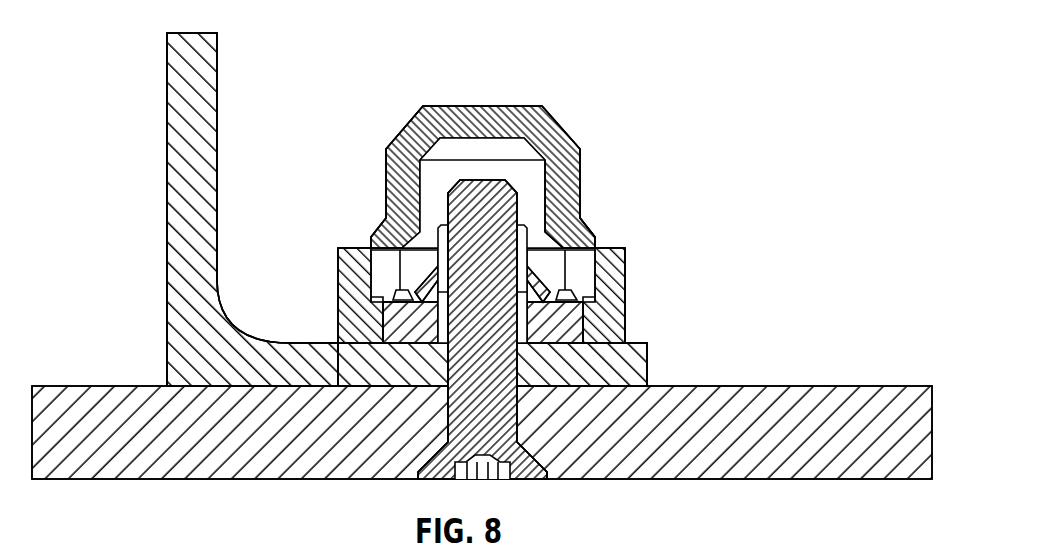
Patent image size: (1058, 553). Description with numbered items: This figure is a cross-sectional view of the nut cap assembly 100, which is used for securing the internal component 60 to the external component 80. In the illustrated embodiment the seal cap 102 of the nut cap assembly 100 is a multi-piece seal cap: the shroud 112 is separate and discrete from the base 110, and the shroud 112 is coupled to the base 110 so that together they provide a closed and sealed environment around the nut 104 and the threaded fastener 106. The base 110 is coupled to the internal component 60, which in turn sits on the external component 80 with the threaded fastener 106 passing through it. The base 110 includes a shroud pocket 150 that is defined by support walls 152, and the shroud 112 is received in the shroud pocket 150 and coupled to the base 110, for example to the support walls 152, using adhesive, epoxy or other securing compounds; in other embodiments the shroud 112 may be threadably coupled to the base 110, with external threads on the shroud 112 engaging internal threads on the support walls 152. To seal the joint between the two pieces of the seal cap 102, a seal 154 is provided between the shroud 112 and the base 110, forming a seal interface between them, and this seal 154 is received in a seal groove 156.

The nut cap assembly 100 is at (497, 239).
The seal cap 102 is at (490, 171).
The nut 104 is at (584, 330).
The threaded fastener 106 is at (505, 197).
The base 110 is at (628, 341).
The shroud 112 is at (574, 197).
The shroud pocket 150 is at (491, 261).
The support walls 152 is at (618, 276).
The seal 154 is at (396, 291).
The seal groove 156 is at (384, 306).
The internal component 60 is at (648, 381).
The external component 80 is at (879, 392).